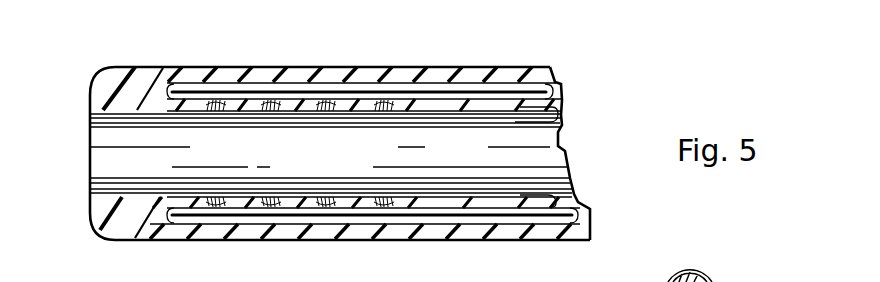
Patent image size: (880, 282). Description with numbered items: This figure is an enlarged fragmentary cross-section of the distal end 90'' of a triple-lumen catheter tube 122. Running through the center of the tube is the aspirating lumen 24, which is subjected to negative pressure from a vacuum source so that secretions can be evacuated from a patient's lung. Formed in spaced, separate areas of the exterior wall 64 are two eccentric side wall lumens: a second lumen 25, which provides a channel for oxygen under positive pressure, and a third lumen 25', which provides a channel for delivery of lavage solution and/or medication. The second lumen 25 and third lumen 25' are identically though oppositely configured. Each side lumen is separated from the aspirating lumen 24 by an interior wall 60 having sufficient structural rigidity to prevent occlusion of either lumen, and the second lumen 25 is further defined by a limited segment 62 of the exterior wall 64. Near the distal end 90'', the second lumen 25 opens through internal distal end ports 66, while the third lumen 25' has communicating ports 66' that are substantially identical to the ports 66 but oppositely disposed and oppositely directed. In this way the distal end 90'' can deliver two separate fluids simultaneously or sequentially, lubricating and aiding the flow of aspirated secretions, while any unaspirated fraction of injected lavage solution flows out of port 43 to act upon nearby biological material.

The distal end 90'' is at (338, 147).
The catheter tube 122 is at (200, 62).
The communicating ports 66' is at (364, 65).
The exterior wall 64 is at (392, 78).
The aspirating lumen 24 is at (445, 125).
The limited segment of the exterior wall 62 is at (515, 75).
The third lumen 25' is at (577, 58).
The interior wall 60 is at (562, 118).
The second lumen 25 is at (611, 198).
The internal distal end ports 66 is at (366, 236).
The port 43 is at (105, 113).